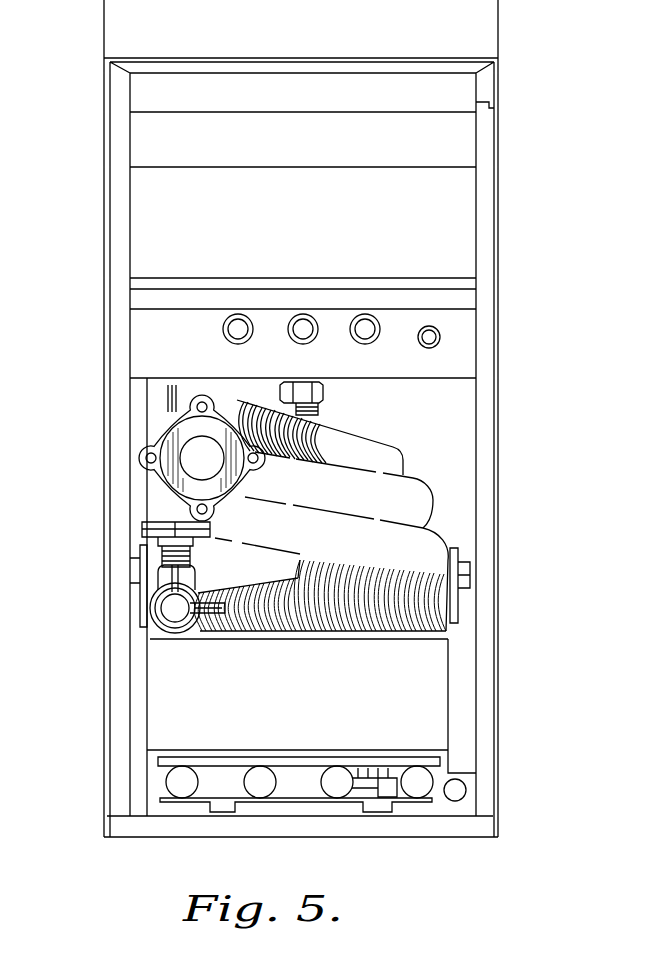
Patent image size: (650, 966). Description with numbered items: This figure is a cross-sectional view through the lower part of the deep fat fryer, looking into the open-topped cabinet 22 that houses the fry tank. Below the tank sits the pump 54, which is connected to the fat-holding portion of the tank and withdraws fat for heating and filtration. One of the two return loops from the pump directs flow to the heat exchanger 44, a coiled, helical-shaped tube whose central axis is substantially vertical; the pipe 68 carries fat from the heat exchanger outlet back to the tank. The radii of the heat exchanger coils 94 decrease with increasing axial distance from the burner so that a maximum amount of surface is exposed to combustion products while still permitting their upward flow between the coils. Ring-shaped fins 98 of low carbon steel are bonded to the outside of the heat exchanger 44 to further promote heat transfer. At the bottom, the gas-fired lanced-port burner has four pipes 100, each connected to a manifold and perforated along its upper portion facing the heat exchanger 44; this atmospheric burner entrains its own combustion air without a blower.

The cabinet 22 is at (104, 403).
The pump 54 is at (208, 397).
The pipe 68 is at (322, 410).
The heat exchanger 44 is at (410, 470).
The heat exchanger coils 94 is at (435, 497).
The ring-shaped fins 98 is at (328, 633).
The pipes 100 is at (252, 782).